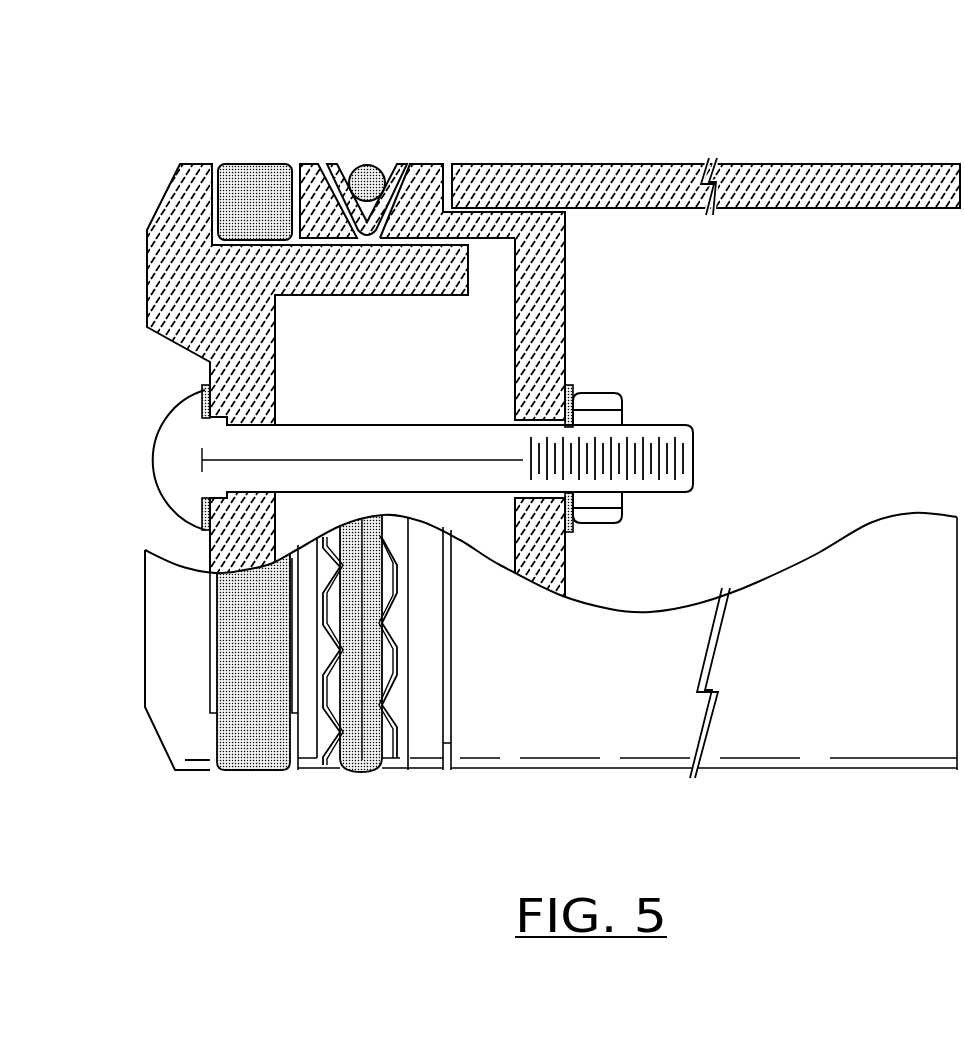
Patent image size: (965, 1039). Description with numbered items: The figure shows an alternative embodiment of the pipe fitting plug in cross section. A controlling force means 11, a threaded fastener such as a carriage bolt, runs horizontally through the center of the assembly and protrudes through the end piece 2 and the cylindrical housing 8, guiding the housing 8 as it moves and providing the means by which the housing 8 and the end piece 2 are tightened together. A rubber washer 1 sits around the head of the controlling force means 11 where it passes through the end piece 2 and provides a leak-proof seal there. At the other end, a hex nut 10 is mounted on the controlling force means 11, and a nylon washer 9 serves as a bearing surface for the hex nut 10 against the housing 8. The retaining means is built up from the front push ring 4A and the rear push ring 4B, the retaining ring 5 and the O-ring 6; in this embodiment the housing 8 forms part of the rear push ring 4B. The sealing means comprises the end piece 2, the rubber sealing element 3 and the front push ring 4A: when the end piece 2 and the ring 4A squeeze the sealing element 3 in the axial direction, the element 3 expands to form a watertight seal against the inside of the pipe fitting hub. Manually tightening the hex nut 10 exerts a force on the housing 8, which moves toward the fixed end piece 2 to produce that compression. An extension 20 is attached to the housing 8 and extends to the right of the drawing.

The rubber washer 1 is at (138, 441).
The end piece 2 is at (148, 217).
The rubber sealing element 3 is at (248, 157).
The front push ring 4A is at (307, 157).
The rear push ring 4B is at (440, 157).
The retaining ring 5 is at (333, 157).
The O-ring 6 is at (370, 168).
The cylindrical housing 8 is at (515, 362).
The nylon washer 9 is at (577, 380).
The hex nut 10 is at (622, 395).
The controlling force means 11 is at (695, 463).
The extension 20 is at (937, 548).